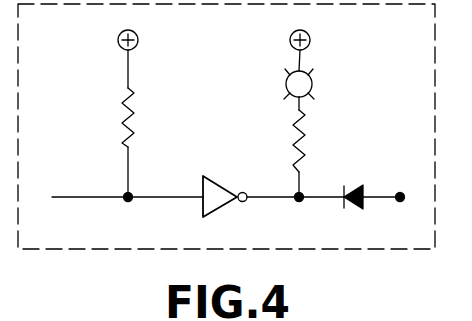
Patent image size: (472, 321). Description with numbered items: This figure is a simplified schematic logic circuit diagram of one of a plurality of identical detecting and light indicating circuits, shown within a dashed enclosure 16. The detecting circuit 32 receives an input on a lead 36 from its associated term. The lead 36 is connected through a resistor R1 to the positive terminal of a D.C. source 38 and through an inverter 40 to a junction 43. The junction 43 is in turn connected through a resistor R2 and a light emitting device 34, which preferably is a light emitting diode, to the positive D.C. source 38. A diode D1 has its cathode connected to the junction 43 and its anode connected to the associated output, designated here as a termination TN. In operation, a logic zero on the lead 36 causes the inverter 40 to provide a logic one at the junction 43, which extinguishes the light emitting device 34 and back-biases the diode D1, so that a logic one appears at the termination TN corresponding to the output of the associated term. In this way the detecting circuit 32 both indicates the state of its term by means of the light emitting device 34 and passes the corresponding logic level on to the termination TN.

The dashed enclosure / controller unit 16 is at (396, 250).
The detecting circuit 32 is at (228, 124).
The light emitting device 34 is at (312, 84).
The lead 36 is at (95, 194).
The D.C. source 38 is at (139, 37).
The inverter 40 is at (227, 186).
The junction 43 is at (299, 201).
The resistor R1 is at (135, 104).
The resistor R2 is at (306, 132).
The diode D1 is at (355, 185).
The termination TN is at (401, 192).